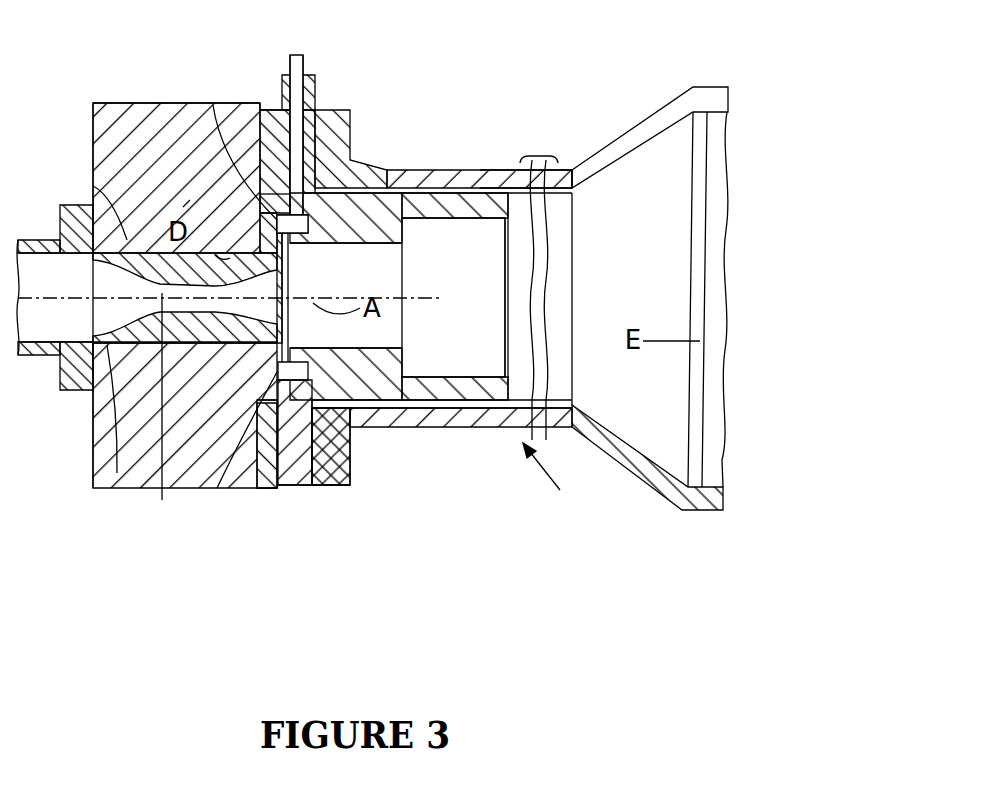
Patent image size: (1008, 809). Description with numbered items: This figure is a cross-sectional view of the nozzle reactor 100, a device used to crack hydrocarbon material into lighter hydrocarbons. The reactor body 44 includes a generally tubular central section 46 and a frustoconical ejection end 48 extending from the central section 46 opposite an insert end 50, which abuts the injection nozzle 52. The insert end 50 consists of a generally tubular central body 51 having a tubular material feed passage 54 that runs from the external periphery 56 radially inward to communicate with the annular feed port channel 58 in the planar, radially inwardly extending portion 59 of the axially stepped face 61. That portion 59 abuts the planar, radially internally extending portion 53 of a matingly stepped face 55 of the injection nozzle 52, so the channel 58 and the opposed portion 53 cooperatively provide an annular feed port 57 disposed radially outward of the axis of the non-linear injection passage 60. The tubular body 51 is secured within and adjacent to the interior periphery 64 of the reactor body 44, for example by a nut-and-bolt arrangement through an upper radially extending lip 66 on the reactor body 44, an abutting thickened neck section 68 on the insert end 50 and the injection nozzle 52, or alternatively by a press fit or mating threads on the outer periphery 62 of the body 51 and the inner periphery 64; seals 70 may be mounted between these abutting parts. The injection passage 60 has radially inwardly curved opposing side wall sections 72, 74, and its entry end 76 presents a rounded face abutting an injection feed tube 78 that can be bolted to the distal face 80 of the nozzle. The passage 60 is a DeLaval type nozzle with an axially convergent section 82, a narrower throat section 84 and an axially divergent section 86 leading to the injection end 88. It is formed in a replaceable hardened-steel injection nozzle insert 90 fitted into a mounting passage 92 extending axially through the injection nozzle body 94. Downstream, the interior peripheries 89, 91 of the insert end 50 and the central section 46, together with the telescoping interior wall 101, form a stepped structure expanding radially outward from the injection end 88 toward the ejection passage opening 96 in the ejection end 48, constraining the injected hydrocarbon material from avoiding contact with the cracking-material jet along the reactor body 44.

The reactor body 44 is at (437, 168).
The tubular central section 46 is at (493, 168).
The frustoconical ejection end 48 is at (615, 140).
The insert end 50 is at (270, 108).
The tubular central body 51 is at (387, 415).
The injection nozzle 52 is at (191, 94).
The radially internally extending portion 53 is at (290, 256).
The tubular material feed passage 54 is at (296, 62).
The matingly stepped face 55 is at (343, 483).
The external periphery 56 is at (291, 485).
The annular feed port 57 is at (277, 220).
The feed port channel 58 is at (353, 412).
The radially inwardly extending portion 59 is at (213, 105).
The non-linear injection passage 60 is at (288, 285).
The axially stepped face 61 is at (238, 103).
The outer periphery 62 is at (460, 408).
The interior periphery 64 is at (426, 410).
The upper radially extending lip 66 is at (345, 122).
The thickened neck section 68 is at (283, 470).
The seal 70 is at (217, 488).
The side wall section 72 is at (93, 318).
The side wall section 74 is at (93, 273).
The entry end 76 is at (40, 243).
The injection feed tube 78 is at (63, 363).
The distal face 80 is at (92, 135).
The axially convergent section 82 is at (93, 403).
The throat section 84 is at (162, 415).
The axially divergent section 86 is at (215, 255).
The injection end 88 is at (290, 318).
The interior periphery 89 is at (402, 365).
The injection nozzle insert 90 is at (93, 186).
The interior periphery 91 is at (558, 400).
The injection nozzle mounting passage 92 is at (138, 362).
The injection nozzle body 94 is at (127, 140).
The ejection passage opening 96 is at (727, 138).
The nozzle reactor 100 is at (556, 481).
The telescoping interior wall 101 is at (627, 437).